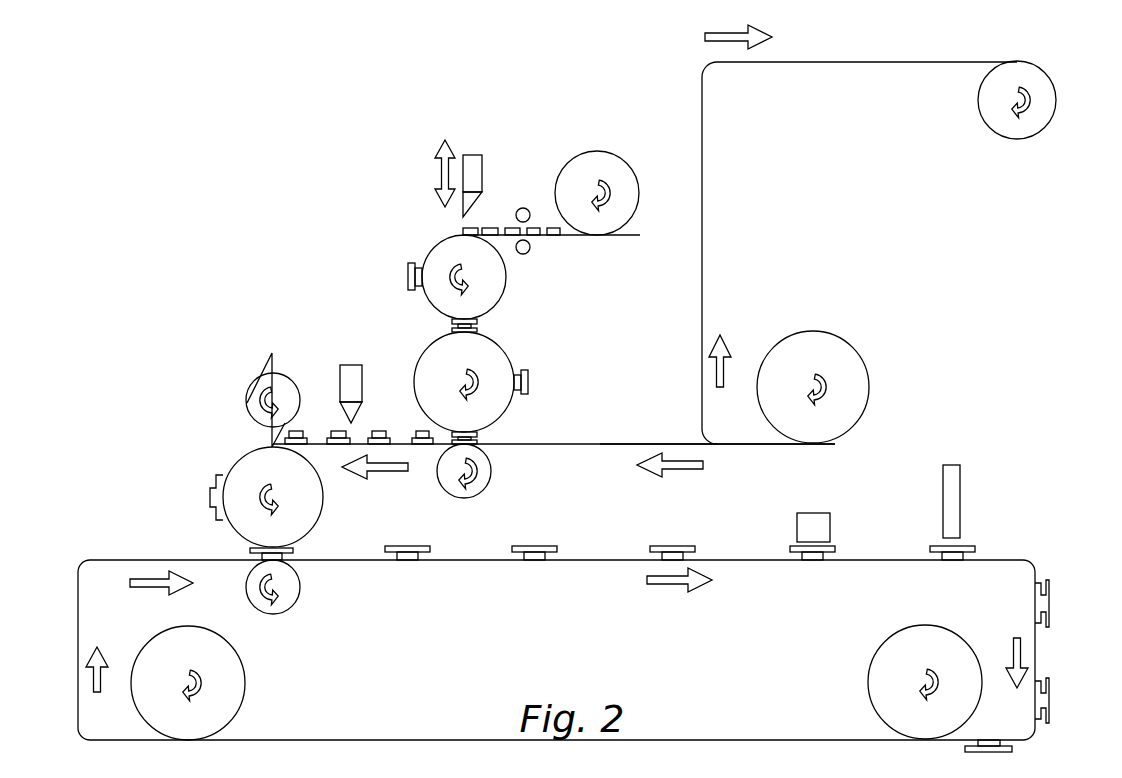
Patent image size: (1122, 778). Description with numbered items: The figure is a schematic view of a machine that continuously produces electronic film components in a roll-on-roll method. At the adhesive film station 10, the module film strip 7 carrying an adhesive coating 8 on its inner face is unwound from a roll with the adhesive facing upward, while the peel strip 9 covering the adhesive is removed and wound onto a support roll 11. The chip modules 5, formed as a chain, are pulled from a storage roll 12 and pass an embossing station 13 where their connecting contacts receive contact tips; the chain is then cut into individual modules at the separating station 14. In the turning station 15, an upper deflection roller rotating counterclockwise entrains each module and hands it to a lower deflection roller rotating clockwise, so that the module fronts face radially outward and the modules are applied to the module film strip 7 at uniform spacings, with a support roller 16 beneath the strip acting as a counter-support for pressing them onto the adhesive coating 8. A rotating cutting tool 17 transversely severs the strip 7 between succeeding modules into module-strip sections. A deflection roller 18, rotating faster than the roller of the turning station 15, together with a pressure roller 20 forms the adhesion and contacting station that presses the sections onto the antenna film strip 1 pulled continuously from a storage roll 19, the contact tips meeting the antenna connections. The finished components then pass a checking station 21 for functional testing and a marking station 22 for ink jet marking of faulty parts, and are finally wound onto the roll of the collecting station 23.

The antenna film strip 1 is at (152, 560).
The chip modules 5 is at (408, 272).
The module film strip 7 is at (585, 444).
The adhesive coating 8 is at (610, 444).
The peel strip 9 is at (703, 272).
The adhesive film station 10 is at (860, 392).
The support roll 11 is at (1050, 103).
The storage roll 12 is at (600, 162).
The embossing station 13 is at (527, 210).
The separating station 14 is at (482, 163).
The turning station 15 is at (497, 280).
The support roller 16 is at (483, 473).
The rotating cutting tool 17 is at (253, 405).
The deflection roller 18 is at (313, 498).
The storage roll 19 is at (235, 690).
The pressure roller 20 is at (290, 590).
The checking station 21 is at (838, 536).
The marking station 22 is at (978, 536).
The collecting station 23 is at (877, 688).